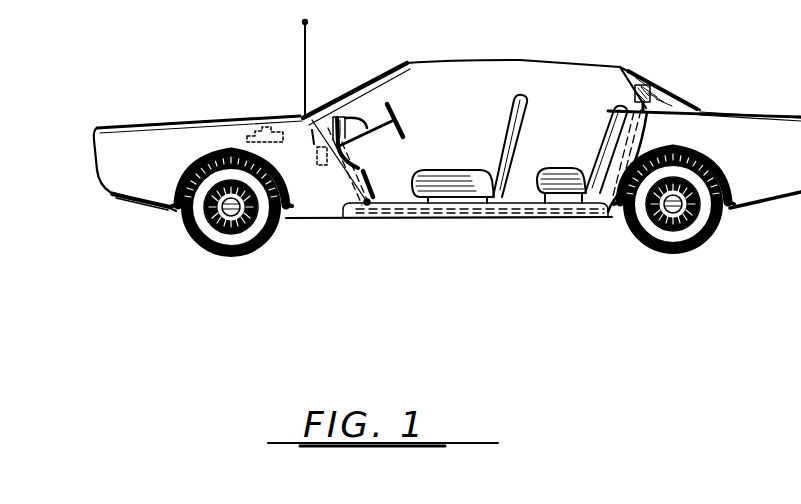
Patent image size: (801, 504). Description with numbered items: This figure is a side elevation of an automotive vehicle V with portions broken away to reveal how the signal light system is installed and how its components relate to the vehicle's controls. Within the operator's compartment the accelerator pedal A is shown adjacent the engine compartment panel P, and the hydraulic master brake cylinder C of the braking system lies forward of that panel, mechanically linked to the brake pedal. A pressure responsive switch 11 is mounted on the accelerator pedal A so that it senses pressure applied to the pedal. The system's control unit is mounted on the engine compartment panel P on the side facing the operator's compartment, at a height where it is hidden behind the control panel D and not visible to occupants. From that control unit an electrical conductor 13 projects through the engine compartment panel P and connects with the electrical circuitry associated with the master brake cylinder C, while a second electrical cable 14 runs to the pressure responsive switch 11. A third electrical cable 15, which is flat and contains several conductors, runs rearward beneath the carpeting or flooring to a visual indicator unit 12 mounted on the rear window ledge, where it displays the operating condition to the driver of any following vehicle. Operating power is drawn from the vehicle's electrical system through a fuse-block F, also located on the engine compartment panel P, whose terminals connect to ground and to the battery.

The pressure responsive switch 11 is at (368, 175).
The visual indicator unit 12 is at (632, 92).
The electrical conductor 13 is at (298, 114).
The second electrical cable 14 is at (358, 155).
The third electrical cable 15 is at (571, 211).
The accelerator pedal A is at (358, 201).
The hydraulic master brake cylinder C is at (246, 137).
The control panel D is at (354, 116).
The fuse-block F is at (323, 160).
The engine compartment panel P is at (310, 142).
The vehicle V is at (796, 114).